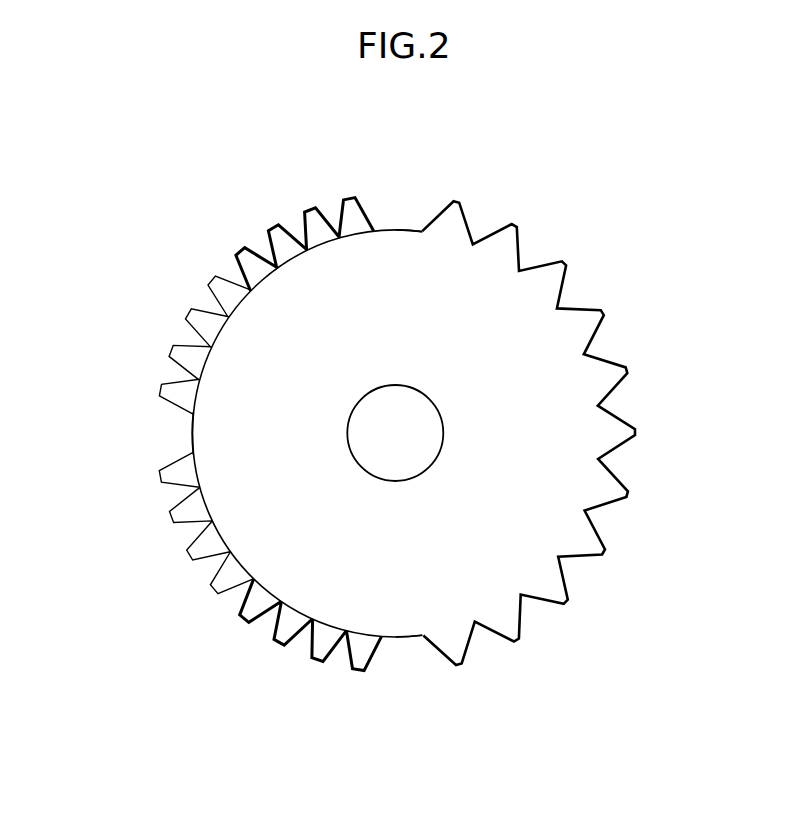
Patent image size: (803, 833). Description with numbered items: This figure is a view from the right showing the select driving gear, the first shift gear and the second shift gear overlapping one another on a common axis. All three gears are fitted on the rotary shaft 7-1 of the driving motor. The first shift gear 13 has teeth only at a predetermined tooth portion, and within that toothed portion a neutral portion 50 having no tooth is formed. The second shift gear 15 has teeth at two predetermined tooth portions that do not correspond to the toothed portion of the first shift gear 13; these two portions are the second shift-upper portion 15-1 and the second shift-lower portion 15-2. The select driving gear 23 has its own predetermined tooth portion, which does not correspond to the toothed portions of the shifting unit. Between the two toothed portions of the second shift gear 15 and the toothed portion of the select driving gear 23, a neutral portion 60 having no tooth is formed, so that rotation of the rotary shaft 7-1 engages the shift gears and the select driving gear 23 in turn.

The rotary shaft 7-1 is at (410, 440).
The first shift gear 13 is at (258, 436).
The second shift gear 15 is at (298, 436).
The second shift-upper portion 15-1 is at (345, 180).
The second shift-lower portion 15-2 is at (303, 649).
The select driving gear 23 is at (562, 385).
The neutral portion 50 is at (183, 437).
The neutral portion 60 is at (392, 223).